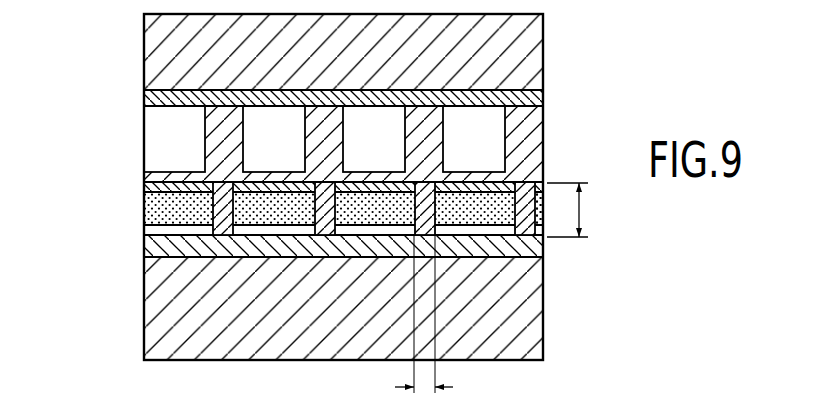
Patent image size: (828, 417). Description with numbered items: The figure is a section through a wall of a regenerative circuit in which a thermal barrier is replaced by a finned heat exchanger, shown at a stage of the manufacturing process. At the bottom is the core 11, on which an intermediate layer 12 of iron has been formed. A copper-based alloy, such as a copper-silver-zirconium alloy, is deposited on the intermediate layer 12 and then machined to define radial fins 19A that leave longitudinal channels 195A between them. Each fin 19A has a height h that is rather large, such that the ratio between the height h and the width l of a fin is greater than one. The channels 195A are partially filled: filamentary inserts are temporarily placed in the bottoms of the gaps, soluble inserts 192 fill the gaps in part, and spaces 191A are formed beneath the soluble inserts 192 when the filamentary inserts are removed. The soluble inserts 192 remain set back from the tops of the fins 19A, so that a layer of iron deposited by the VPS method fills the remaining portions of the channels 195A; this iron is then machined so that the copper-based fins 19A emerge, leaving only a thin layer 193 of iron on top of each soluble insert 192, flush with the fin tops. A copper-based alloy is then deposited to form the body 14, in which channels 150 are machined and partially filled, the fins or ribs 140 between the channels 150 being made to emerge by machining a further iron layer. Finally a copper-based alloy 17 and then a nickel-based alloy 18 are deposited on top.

The core 11 is at (180, 336).
The intermediate layer 12 is at (143, 251).
The spaces 191A is at (143, 231).
The soluble inserts 192 is at (143, 208).
The thin layer of iron 193 is at (143, 190).
The radial fins 19A is at (541, 218).
The channels 195A is at (493, 232).
The body 14 is at (537, 138).
The fins or ribs 140 is at (223, 138).
The channels 150 is at (445, 156).
The copper-based alloy 17 is at (143, 103).
The nickel-based alloy 18 is at (158, 33).
The height h is at (575, 210).
The width l is at (424, 314).